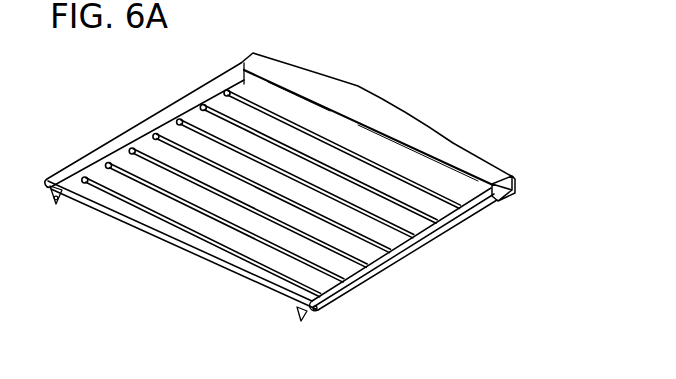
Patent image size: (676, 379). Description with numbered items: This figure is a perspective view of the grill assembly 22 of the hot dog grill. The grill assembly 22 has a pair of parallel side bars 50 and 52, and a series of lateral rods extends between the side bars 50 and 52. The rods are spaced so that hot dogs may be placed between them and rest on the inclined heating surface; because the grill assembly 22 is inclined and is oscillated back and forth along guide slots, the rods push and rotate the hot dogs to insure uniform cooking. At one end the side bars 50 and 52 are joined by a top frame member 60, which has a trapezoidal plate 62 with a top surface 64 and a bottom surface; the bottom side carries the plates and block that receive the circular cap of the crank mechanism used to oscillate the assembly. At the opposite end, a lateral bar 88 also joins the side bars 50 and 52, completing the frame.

The grill assembly 22 is at (357, 84).
The side bar 50 is at (152, 118).
The side bar 52 is at (415, 250).
The top frame member 60 is at (410, 109).
The trapezoidal plate 62 is at (492, 160).
The top surface 64 is at (453, 140).
The lateral bar 88 is at (197, 256).